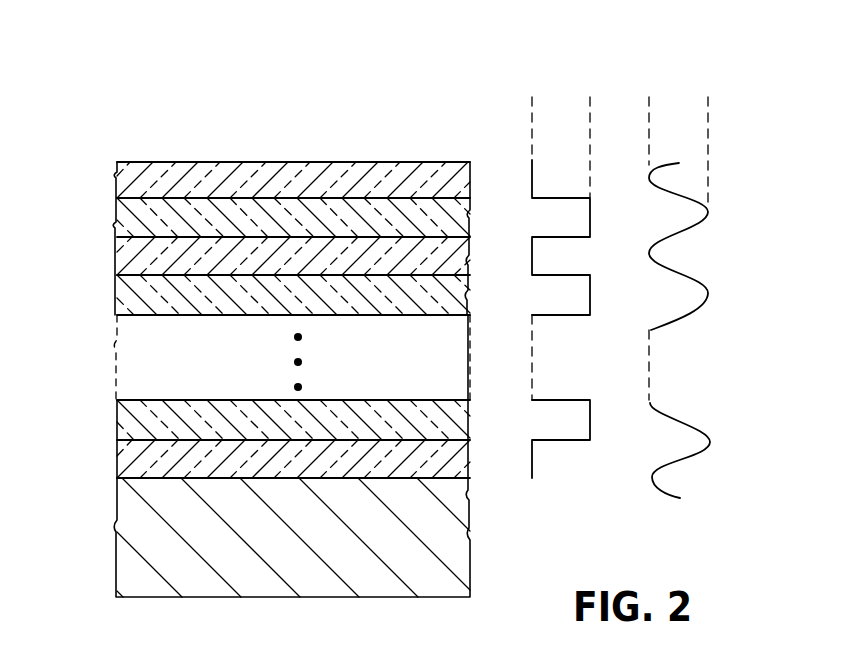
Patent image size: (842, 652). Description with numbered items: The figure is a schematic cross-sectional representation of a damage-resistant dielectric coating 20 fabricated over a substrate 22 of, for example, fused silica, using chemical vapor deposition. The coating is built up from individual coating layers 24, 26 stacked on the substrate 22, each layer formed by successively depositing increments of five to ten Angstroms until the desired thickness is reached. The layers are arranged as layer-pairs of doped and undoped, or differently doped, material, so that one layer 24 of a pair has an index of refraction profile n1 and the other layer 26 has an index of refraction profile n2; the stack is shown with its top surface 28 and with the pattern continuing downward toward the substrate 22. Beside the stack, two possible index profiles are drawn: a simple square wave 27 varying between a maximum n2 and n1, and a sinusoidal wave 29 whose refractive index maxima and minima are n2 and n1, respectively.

The damage-resistant dielectric coating 20 is at (260, 349).
The substrate 22 is at (436, 584).
The coating layer 24 is at (117, 178).
The coating layer 26 is at (117, 226).
The top surface of multilayer structure 28 is at (266, 161).
The square wave 27 is at (562, 56).
The sinusoidal wave 29 is at (693, 53).